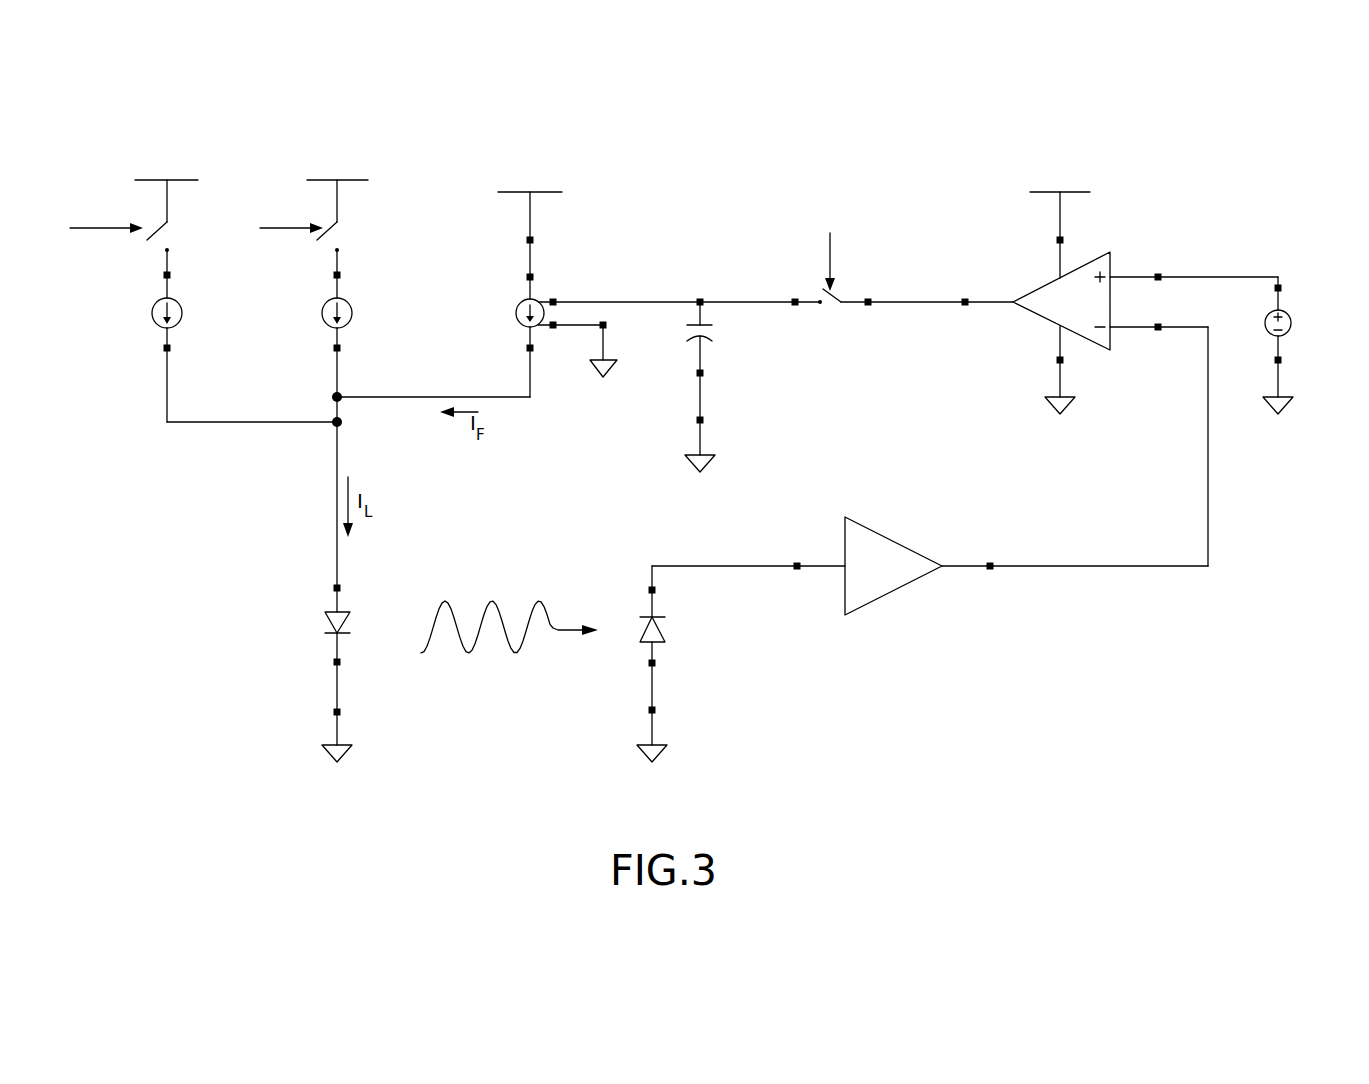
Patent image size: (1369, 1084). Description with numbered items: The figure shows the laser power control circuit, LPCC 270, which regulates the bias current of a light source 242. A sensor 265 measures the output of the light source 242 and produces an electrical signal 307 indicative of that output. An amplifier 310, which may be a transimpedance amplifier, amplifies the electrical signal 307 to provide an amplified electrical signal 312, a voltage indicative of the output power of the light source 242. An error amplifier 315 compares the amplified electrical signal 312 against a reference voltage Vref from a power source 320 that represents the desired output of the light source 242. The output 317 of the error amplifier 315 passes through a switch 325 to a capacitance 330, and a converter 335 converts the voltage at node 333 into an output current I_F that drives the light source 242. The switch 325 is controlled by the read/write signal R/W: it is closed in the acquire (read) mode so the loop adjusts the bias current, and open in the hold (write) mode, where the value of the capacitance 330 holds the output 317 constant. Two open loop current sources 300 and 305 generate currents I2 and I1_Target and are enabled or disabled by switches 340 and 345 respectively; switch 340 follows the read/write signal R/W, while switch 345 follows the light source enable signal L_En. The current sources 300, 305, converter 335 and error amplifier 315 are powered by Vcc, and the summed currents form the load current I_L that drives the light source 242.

The LPCC 270 is at (696, 166).
The switch 340 is at (172, 240).
The switch 345 is at (342, 238).
The current source 300 is at (178, 293).
The current source 305 is at (350, 293).
The converter 335 is at (538, 298).
The node 333 is at (700, 293).
The capacitance 330 is at (707, 334).
The switch 325 is at (833, 313).
The output 317 is at (935, 298).
The error amplifier 315 is at (1110, 258).
The power source 320 is at (1292, 323).
The amplified electrical signal 312 is at (1047, 563).
The amplifier 310 is at (883, 600).
The electrical signal 307 is at (700, 563).
The sensor 265 is at (665, 633).
The light source 242 is at (328, 615).